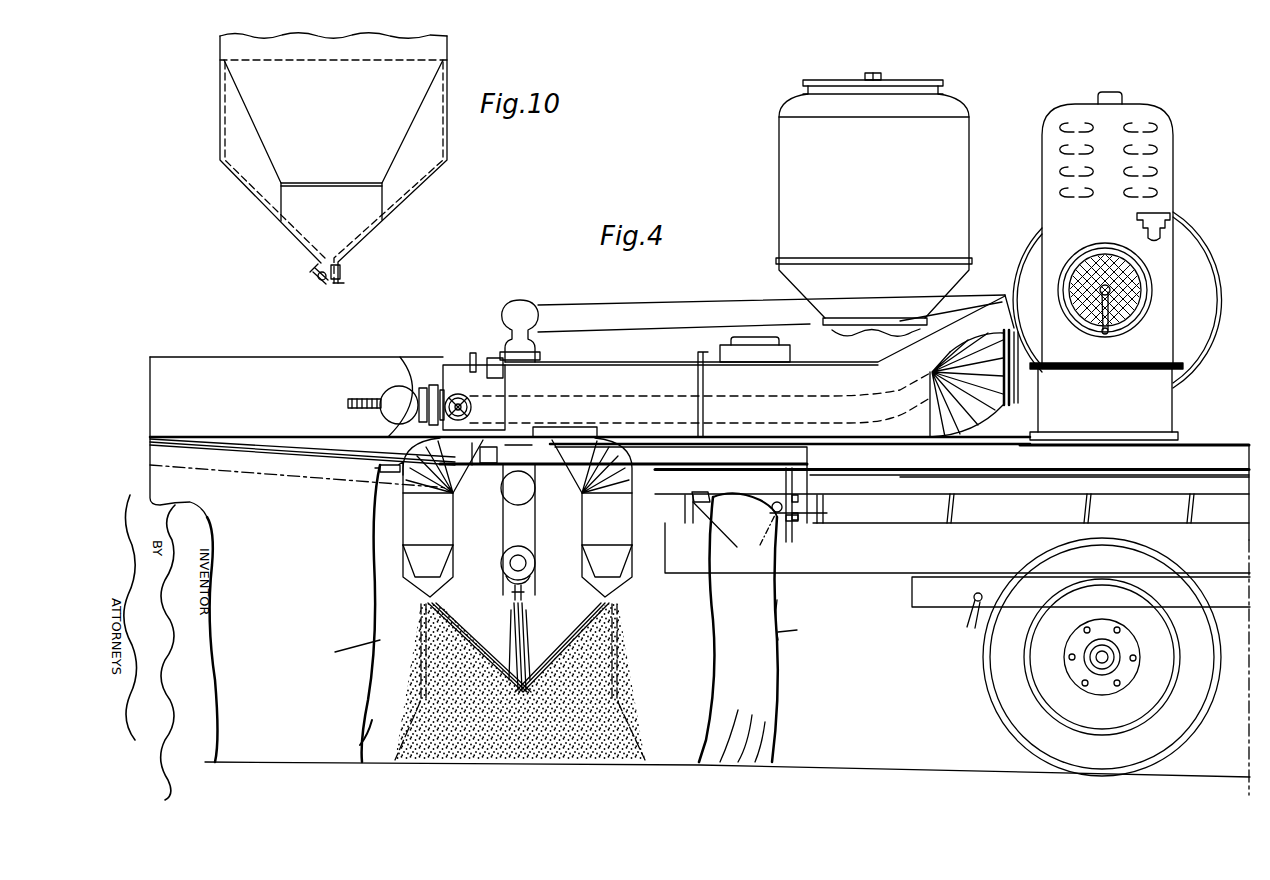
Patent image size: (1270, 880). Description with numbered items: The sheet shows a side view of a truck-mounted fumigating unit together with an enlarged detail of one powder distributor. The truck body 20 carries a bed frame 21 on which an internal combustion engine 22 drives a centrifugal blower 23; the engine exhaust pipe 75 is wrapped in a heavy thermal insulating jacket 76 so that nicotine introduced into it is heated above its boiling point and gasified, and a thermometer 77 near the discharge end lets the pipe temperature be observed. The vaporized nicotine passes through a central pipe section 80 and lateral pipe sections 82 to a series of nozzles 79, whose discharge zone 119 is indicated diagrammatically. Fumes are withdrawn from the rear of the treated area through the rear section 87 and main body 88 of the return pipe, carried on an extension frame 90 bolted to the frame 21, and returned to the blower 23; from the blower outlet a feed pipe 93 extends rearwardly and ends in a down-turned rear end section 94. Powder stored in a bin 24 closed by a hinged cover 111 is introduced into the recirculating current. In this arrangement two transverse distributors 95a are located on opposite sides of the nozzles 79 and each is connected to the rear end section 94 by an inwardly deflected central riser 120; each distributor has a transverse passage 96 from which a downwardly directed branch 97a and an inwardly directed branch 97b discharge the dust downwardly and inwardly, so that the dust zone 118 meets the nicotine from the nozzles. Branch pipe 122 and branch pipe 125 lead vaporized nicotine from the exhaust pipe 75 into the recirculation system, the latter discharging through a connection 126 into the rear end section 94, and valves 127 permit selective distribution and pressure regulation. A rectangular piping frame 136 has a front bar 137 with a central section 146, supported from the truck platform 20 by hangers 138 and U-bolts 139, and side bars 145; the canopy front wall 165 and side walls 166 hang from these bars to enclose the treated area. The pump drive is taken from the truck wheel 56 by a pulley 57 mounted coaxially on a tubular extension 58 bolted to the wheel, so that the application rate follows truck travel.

In FIG. 10, the transverse passage 96 is at (332, 214).
In FIG. 10, the downwardly directed branch 97a is at (340, 282).
In FIG. 10, the inwardly directed branch 97b is at (322, 280).
In FIG. 4, the hinged cover 111 is at (822, 79).
In FIG. 4, the bin 24 is at (940, 187).
In FIG. 4, the internal combustion engine 22 is at (1163, 196).
In FIG. 4, the centrifugal blower 23 is at (1188, 262).
In FIG. 4, the frame 21 is at (1152, 447).
In FIG. 4, the truck body 20 is at (1196, 476).
In FIG. 4, the branch pipe 122 is at (680, 318).
In FIG. 4, the thermal insulating jacket 76 is at (627, 320).
In FIG. 4, the feed pipe 93 is at (662, 385).
In FIG. 4, the rear section of return pipe 87 is at (318, 373).
In FIG. 4, the thermometer 77 is at (356, 400).
In FIG. 4, the branch pipe 125 is at (408, 398).
In FIG. 4, the connection 126 is at (428, 392).
In FIG. 4, the main body of return pipe 88 is at (433, 372).
In FIG. 4, the valves 127 is at (485, 378).
In FIG. 4, the rear end section 94 is at (512, 375).
In FIG. 4, the extension frame 90 is at (353, 450).
In FIG. 4, the side bars 145 is at (380, 468).
In FIG. 4, the rectangular frame 136 is at (377, 490).
In FIG. 4, the side walls 166 is at (228, 515).
In FIG. 4, the front wall 165 is at (779, 603).
In FIG. 4, the transverse distributors 95a is at (425, 557).
In FIG. 4, the central riser 120 is at (455, 472).
In FIG. 4, the exhaust pipe 75 is at (520, 527).
In FIG. 4, the lateral pipe sections 82 is at (537, 560).
In FIG. 4, the central pipe section 80 is at (524, 586).
In FIG. 4, the nozzles 79 is at (512, 588).
In FIG. 4, the zone of dust discharge 118 is at (432, 668).
In FIG. 4, the zone of nicotine discharge 119 is at (537, 646).
In FIG. 4, the hangers 138 is at (795, 483).
In FIG. 4, the U-bolts 139 is at (830, 512).
In FIG. 4, the front bar 137 is at (800, 519).
In FIG. 4, the central section 146 is at (771, 508).
In FIG. 4, the truck wheel 56 is at (1040, 668).
In FIG. 4, the pulley 57 is at (1094, 650).
In FIG. 4, the tubular extension 58 is at (1078, 665).